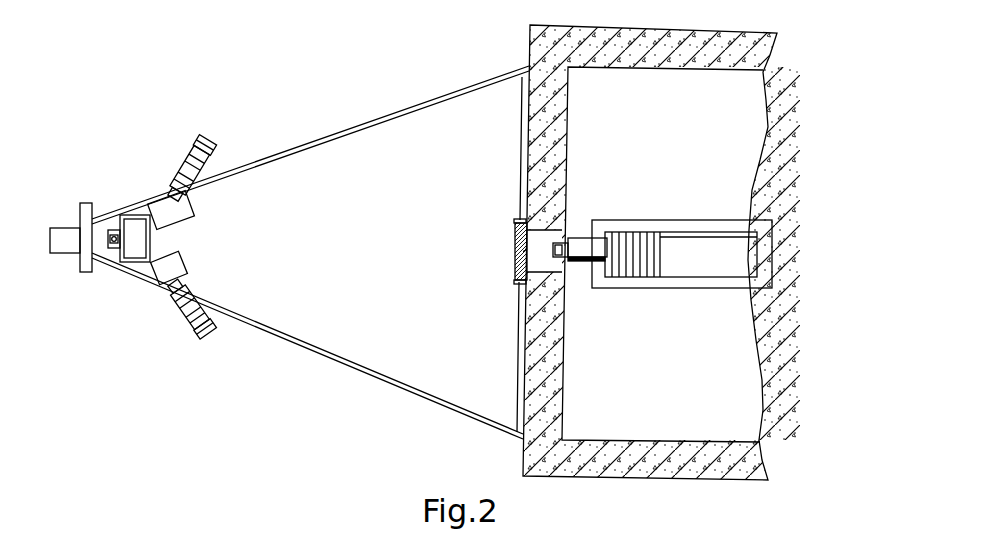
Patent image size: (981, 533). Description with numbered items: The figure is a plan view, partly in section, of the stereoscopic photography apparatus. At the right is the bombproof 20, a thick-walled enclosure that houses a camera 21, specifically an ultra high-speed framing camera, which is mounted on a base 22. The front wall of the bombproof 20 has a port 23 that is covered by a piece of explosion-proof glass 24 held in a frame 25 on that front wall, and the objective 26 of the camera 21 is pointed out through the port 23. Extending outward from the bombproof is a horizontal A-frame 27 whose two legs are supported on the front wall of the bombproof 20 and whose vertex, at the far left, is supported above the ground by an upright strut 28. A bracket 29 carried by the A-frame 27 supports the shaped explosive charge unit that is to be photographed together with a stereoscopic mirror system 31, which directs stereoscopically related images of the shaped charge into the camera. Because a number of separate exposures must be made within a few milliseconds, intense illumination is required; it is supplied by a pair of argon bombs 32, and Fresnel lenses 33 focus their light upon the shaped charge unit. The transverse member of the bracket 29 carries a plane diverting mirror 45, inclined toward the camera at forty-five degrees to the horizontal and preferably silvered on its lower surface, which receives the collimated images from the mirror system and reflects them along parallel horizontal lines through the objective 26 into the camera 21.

The bombproof 20 is at (657, 32).
The camera 21 is at (670, 232).
The base 22 is at (680, 288).
The port 23 is at (554, 268).
The explosion-proof glass 24 is at (515, 248).
The frame 25 is at (515, 280).
The objective 26 is at (561, 240).
The A-frame 27 is at (323, 352).
The upright strut 28 is at (67, 244).
The bracket 29 is at (122, 266).
The stereoscopic mirror system 31 is at (138, 254).
The argon bombs 32 is at (193, 150).
The Fresnel lenses 33 is at (178, 216).
The plane diverting mirror 45 is at (132, 227).